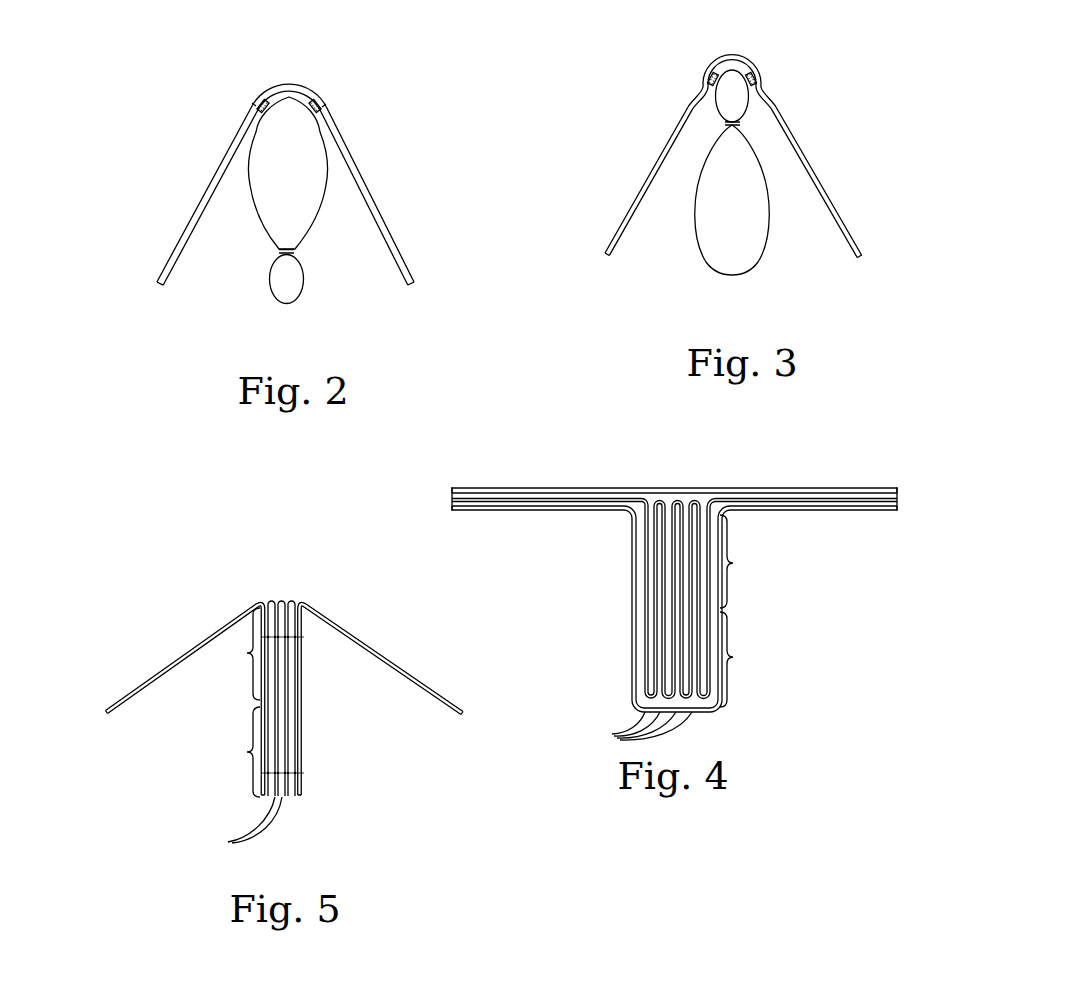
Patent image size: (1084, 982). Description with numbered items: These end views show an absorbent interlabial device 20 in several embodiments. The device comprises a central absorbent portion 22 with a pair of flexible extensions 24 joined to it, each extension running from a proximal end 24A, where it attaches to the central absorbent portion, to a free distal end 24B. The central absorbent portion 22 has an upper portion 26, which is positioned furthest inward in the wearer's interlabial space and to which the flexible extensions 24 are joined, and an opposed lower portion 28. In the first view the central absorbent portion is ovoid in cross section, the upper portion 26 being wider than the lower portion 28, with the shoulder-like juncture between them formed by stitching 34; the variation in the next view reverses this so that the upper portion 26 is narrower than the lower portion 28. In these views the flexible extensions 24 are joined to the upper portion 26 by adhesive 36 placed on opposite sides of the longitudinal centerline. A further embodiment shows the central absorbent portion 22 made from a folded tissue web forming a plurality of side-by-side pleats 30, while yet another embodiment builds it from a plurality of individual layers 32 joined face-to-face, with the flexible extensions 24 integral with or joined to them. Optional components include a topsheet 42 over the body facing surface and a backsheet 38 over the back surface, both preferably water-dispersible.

In FIG. 2, the interlabial device 20 is at (187, 162).
In FIG. 3, the interlabial device 20 is at (652, 88).
In FIG. 4, the interlabial device 20 is at (802, 605).
In FIG. 2, the central absorbent portion 22 is at (264, 225).
In FIG. 3, the central absorbent portion 22 is at (747, 97).
In FIG. 4, the central absorbent portion 22 is at (721, 729).
In FIG. 2, the flexible extensions 24 is at (183, 240).
In FIG. 3, the flexible extensions 24 is at (643, 187).
In FIG. 4, the flexible extensions 24 is at (485, 493).
In FIG. 5, the flexible extensions 24 is at (130, 688).
In FIG. 2, the proximal end 24A is at (256, 105).
In FIG. 2, the distal end 24B is at (158, 284).
In FIG. 2, the upper portion 26 is at (288, 132).
In FIG. 3, the upper portion 26 is at (732, 90).
In FIG. 4, the upper portion 26 is at (743, 561).
In FIG. 5, the upper portion 26 is at (237, 654).
In FIG. 2, the lower portion 28 is at (287, 283).
In FIG. 3, the lower portion 28 is at (732, 230).
In FIG. 4, the lower portion 28 is at (743, 659).
In FIG. 5, the lower portion 28 is at (237, 752).
In FIG. 4, the pleats 30 is at (613, 734).
In FIG. 5, the individual layers 32 is at (230, 842).
In FIG. 2, the stitching 34 is at (295, 252).
In FIG. 3, the stitching 34 is at (741, 122).
In FIG. 5, the stitching 34 is at (308, 637).
In FIG. 2, the adhesive 36 is at (257, 103).
In FIG. 3, the adhesive 36 is at (707, 72).
In FIG. 4, the backsheet 38 is at (478, 512).
In FIG. 4, the topsheet 42 is at (583, 488).